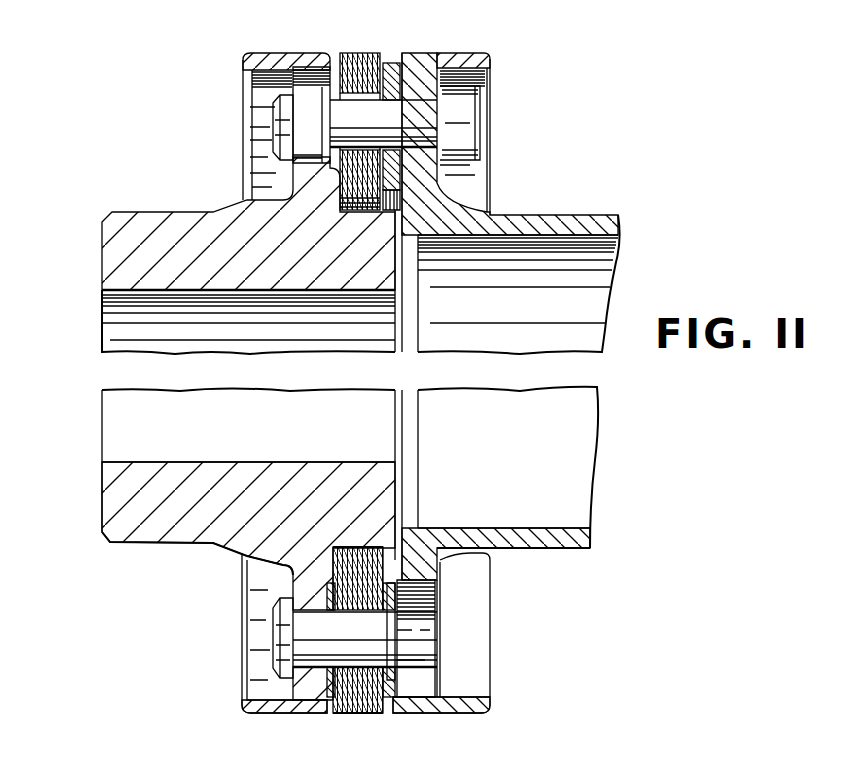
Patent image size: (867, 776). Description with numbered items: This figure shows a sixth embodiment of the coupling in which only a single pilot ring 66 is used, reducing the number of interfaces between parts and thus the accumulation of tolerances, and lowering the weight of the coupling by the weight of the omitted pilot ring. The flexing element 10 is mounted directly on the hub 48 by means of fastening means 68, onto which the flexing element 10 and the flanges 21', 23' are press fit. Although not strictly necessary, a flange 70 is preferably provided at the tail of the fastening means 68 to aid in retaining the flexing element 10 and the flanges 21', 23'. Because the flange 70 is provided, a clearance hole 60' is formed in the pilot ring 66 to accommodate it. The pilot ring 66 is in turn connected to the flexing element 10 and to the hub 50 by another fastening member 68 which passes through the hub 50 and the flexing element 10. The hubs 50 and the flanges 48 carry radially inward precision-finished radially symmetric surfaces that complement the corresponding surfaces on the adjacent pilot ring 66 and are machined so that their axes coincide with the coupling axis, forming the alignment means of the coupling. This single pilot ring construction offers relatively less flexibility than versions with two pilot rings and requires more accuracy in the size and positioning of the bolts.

The flange 48 is at (310, 53).
The pilot ring 66 is at (392, 62).
The hub 50 is at (470, 53).
The fastening means 68 is at (282, 610).
The clearance hole 60' is at (439, 601).
The flange 70 is at (398, 648).
The flange 21' is at (335, 670).
The flexing element 10 is at (362, 715).
The flange 23' is at (407, 670).